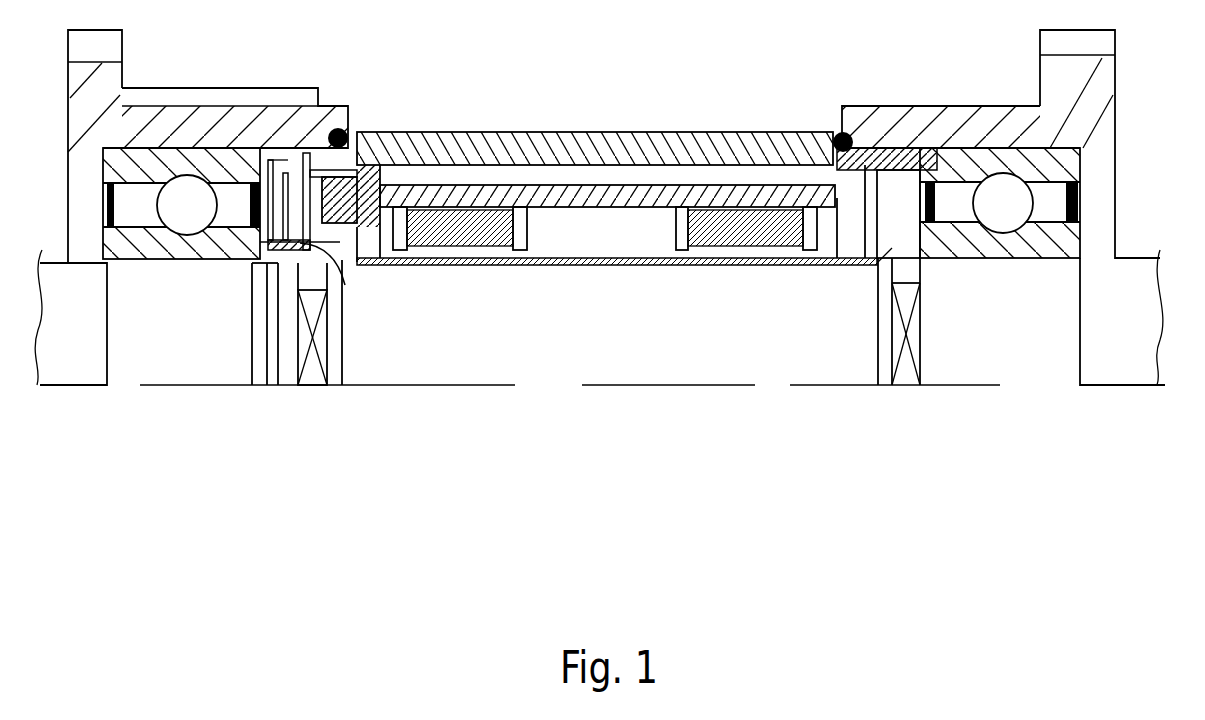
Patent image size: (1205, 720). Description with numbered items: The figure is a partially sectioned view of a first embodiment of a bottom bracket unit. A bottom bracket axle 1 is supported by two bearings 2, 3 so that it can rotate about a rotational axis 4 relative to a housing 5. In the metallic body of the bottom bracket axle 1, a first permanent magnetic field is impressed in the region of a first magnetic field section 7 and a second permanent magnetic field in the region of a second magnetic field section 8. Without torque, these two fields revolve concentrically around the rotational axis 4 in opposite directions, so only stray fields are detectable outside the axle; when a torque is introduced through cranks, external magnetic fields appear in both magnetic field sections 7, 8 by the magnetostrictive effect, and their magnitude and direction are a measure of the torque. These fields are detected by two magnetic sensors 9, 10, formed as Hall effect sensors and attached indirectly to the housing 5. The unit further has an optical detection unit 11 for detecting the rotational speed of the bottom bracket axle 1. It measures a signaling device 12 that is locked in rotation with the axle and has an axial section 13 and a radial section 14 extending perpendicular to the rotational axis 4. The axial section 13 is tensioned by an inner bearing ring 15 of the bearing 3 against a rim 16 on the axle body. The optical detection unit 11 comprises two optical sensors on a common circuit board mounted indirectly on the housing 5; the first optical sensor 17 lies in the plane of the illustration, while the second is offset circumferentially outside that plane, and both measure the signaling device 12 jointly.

The bottom bracket axle 1 is at (1130, 253).
The bearing 2 is at (1097, 191).
The bearing 3 is at (92, 203).
The rotational axis 4 is at (680, 385).
The housing 5 is at (950, 120).
The first magnetic field section 7 is at (497, 290).
The second magnetic field section 8 is at (707, 274).
The magnetic sensor 9 is at (500, 195).
The magnetic sensor 10 is at (748, 178).
The optical detection unit 11 is at (325, 125).
The signaling device 12 is at (277, 183).
The axial section 13 is at (266, 380).
The radial section 14 is at (345, 180).
The inner bearing ring 15 is at (230, 243).
The rim 16 is at (325, 262).
The first optical sensor 17 is at (425, 157).